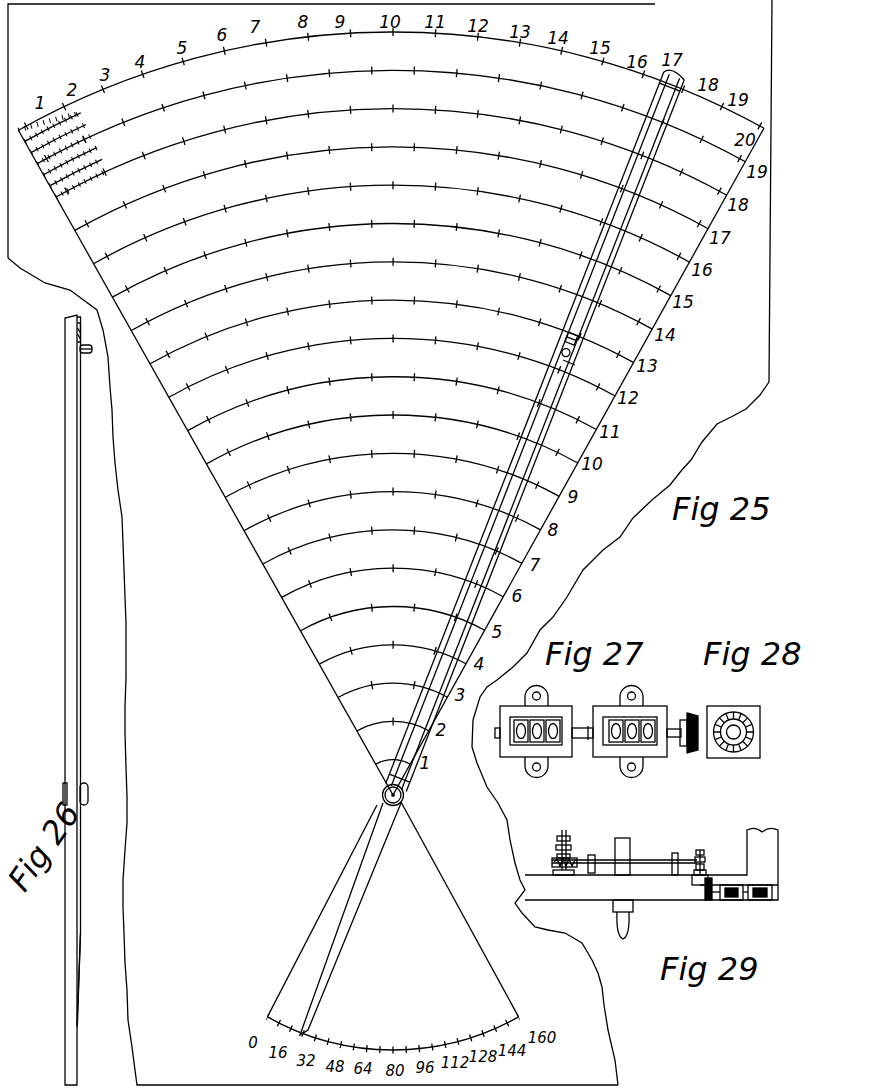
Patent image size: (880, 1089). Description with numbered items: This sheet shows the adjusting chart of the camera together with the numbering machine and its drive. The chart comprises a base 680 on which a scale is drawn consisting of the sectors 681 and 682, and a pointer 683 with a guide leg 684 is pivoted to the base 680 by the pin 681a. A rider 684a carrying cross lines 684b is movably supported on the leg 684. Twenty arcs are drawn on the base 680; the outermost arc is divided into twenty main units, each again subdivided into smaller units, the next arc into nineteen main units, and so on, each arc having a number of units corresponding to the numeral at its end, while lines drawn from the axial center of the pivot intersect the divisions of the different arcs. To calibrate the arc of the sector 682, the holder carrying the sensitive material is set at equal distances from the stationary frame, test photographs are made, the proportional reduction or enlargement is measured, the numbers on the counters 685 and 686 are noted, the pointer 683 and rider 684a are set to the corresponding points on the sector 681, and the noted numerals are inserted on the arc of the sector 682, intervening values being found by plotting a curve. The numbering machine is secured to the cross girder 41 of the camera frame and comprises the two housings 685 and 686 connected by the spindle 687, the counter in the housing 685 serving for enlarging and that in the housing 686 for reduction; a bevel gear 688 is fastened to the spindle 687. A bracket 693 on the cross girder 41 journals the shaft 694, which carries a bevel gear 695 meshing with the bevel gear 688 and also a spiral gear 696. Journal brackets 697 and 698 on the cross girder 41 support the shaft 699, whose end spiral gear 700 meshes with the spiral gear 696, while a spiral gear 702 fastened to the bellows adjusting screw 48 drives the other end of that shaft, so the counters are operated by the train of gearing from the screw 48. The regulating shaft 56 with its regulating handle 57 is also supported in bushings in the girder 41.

In FIG. 25, the base 680 is at (391, 541).
In FIG. 26, the base 680 is at (63, 705).
In FIG. 25, the sector 681 is at (254, 548).
In FIG. 26, the sector 681 is at (82, 792).
In FIG. 25, the pin 681a is at (382, 795).
In FIG. 25, the sector 682 is at (467, 922).
In FIG. 25, the pointer 683 is at (352, 890).
In FIG. 26, the pointer 683 is at (78, 958).
In FIG. 25, the guide leg 684 is at (529, 423).
In FIG. 26, the guide leg 684 is at (78, 600).
In FIG. 25, the rider 684a is at (562, 351).
In FIG. 26, the rider 684a is at (80, 347).
In FIG. 25, the cross lines 684b is at (578, 338).
In FIG. 27, the housing 685 is at (518, 707).
In FIG. 29, the housing 685 is at (761, 901).
In FIG. 27, the housing 686 is at (655, 706).
In FIG. 29, the housing 686 is at (731, 901).
In FIG. 27, the spindle 687 is at (581, 727).
In FIG. 27, the bevel gear 688 is at (688, 713).
In FIG. 28, the bevel gear 688 is at (745, 716).
In FIG. 29, the bevel gear 688 is at (707, 901).
In FIG. 29, the cross girder 41 is at (554, 903).
In FIG. 29, the bellows adjusting screw 48 is at (559, 838).
In FIG. 29, the regulating shaft 56 is at (622, 838).
In FIG. 29, the regulating handle 57 is at (612, 906).
In FIG. 29, the bracket 693 is at (708, 873).
In FIG. 29, the shaft 694 is at (706, 863).
In FIG. 29, the bevel gear 695 is at (692, 881).
In FIG. 29, the spiral gear 696 is at (698, 858).
In FIG. 29, the journal bracket 697 is at (672, 860).
In FIG. 29, the journal bracket 698 is at (593, 856).
In FIG. 29, the shaft 699 is at (638, 858).
In FIG. 29, the spiral gear 700 is at (702, 850).
In FIG. 29, the spiral gear 702 is at (552, 861).